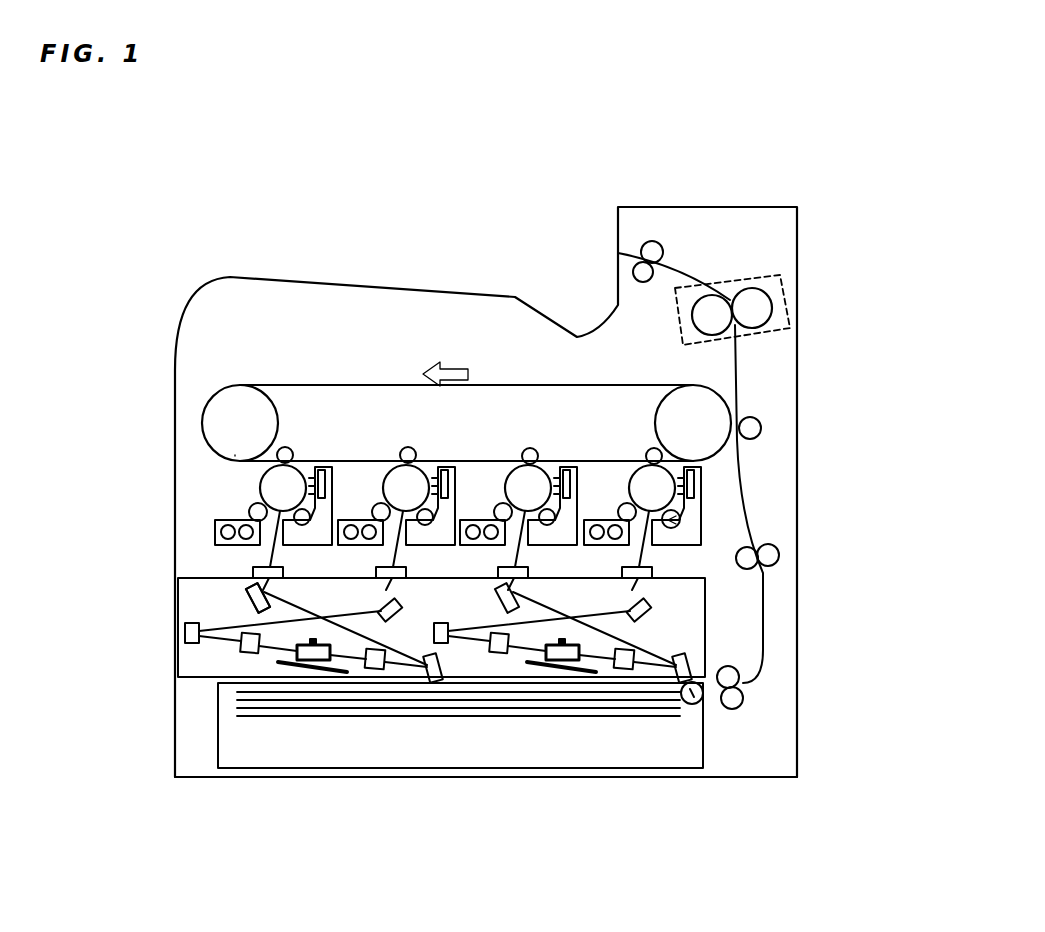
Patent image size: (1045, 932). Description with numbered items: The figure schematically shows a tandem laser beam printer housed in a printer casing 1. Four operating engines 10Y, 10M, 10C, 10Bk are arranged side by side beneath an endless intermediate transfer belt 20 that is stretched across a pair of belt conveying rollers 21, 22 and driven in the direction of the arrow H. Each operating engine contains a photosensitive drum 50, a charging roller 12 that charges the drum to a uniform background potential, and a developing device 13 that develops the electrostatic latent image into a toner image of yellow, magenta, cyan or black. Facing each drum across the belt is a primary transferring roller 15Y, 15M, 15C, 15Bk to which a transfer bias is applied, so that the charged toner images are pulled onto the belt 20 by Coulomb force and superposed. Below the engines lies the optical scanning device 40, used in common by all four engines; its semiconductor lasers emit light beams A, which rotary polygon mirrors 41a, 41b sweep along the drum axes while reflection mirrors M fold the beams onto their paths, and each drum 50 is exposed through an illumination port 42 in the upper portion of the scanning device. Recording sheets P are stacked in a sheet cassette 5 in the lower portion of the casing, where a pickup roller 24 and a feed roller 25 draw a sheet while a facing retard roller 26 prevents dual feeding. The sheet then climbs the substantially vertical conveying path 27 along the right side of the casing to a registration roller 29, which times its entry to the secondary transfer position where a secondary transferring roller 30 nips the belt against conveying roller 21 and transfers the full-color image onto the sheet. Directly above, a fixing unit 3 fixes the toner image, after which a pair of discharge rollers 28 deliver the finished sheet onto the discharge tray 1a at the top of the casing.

The printer casing 1 is at (254, 486).
The discharge tray 1a is at (523, 300).
The fixing unit 3 is at (778, 275).
The sheet cassette 5 is at (703, 755).
The operating engine (yellow) 10Y is at (290, 555).
The operating engine (magenta) 10M is at (378, 555).
The operating engine (cyan) 10C is at (538, 557).
The operating engine (black) 10Bk is at (663, 557).
The charging roller 12 is at (680, 517).
The developing device 13 is at (213, 522).
The primary transferring roller (yellow) 15Y is at (243, 418).
The primary transferring roller (magenta) 15M is at (408, 447).
The primary transferring roller (cyan) 15C is at (530, 448).
The primary transferring roller (black) 15Bk is at (654, 448).
The intermediate transfer belt 20 is at (393, 383).
The belt conveying roller 21 is at (700, 417).
The belt conveying roller 22 is at (213, 395).
The pickup roller 24 is at (680, 703).
The feed roller 25 is at (740, 678).
The retard roller 26 is at (743, 700).
The conveying path 27 is at (740, 392).
The discharge roller 28 is at (652, 241).
The registration roller 29 is at (770, 553).
The secondary transferring roller 30 is at (752, 428).
The optical scanning device 40 is at (396, 724).
The rotary polygon mirror 41a is at (553, 658).
The rotary polygon mirror 41b is at (322, 663).
The illumination port 42 is at (253, 572).
The photosensitive drum 50 is at (192, 473).
The light beam A is at (190, 645).
The reflection mirror M is at (256, 612).
The recording sheet P is at (560, 720).
The arrow (belt rotation direction) H is at (445, 362).